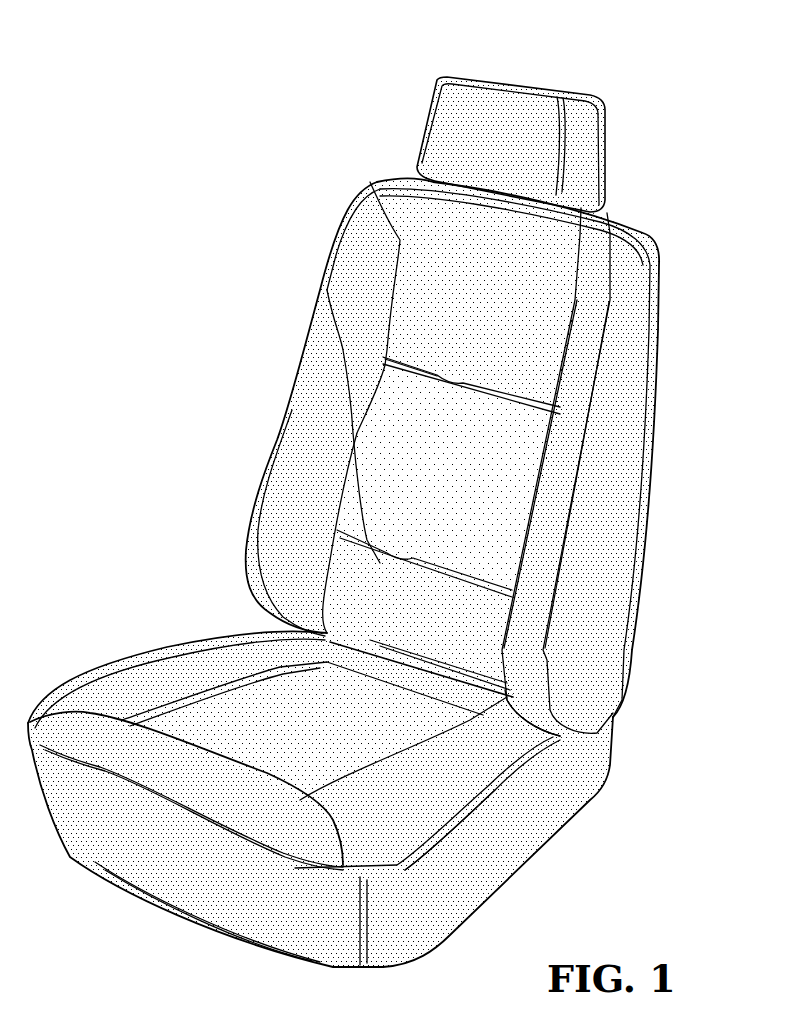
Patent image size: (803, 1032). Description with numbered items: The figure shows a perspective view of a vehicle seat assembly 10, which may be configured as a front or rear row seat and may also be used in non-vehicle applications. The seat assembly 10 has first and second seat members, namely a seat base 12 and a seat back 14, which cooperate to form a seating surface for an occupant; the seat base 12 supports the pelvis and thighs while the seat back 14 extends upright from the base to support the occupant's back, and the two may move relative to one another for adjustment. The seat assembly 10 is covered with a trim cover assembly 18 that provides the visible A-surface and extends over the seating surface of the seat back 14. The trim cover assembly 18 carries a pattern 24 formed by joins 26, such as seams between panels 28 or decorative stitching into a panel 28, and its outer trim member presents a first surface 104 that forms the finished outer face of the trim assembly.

The seat assembly 10 is at (223, 103).
The seat base 12 is at (182, 672).
The seat back 14 is at (363, 233).
The trim cover assembly 18 is at (487, 740).
The pattern 24 is at (583, 370).
The join 26 is at (463, 383).
The panel 28 is at (483, 300).
The first surface 104 is at (570, 450).